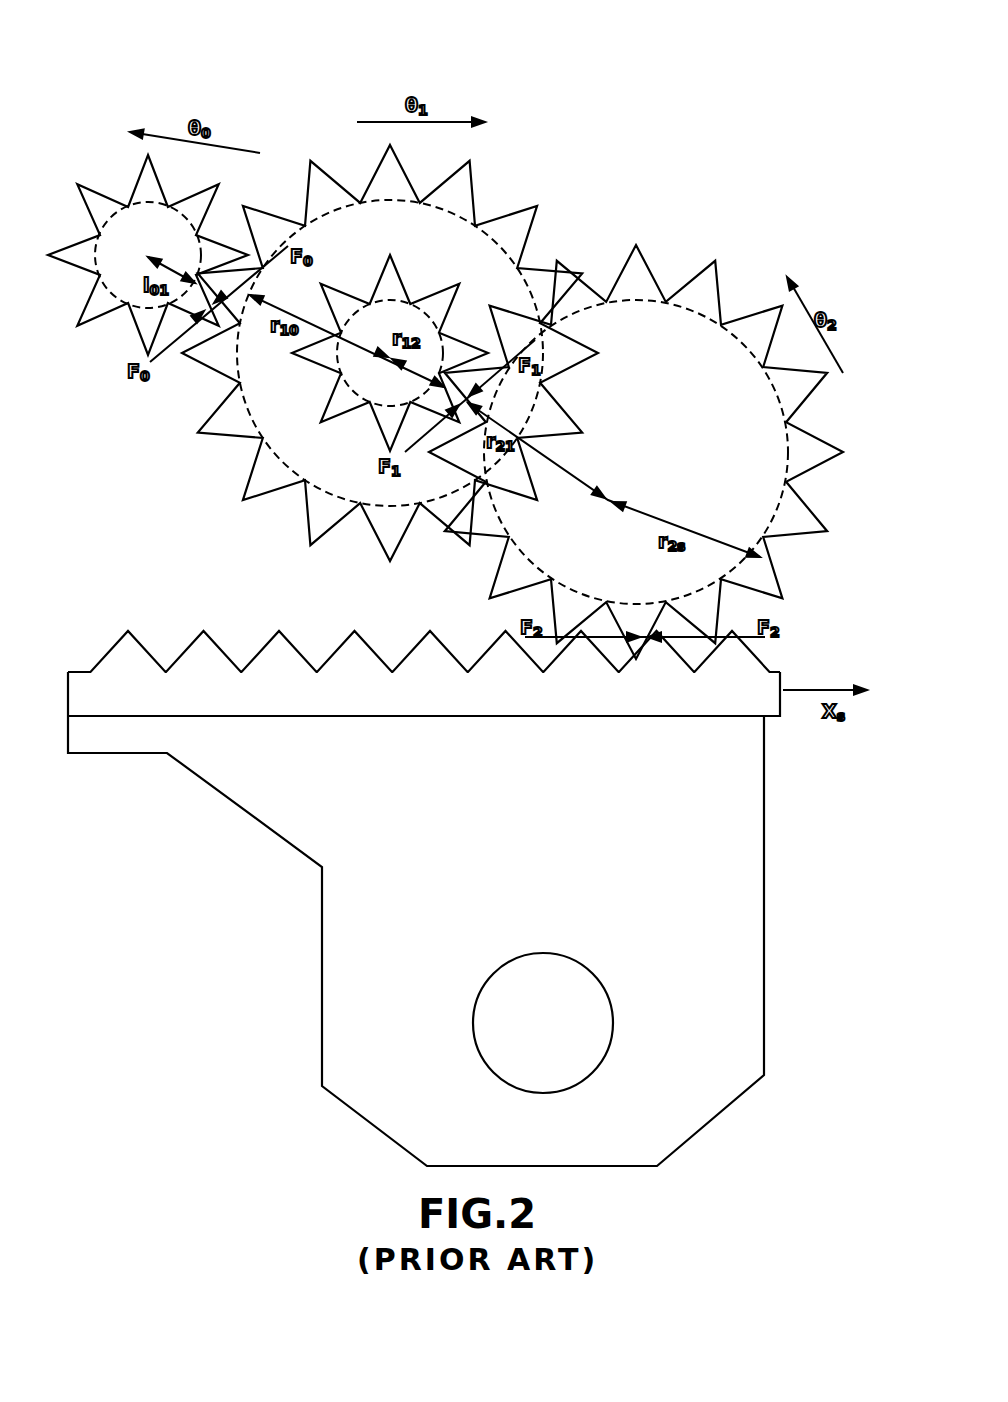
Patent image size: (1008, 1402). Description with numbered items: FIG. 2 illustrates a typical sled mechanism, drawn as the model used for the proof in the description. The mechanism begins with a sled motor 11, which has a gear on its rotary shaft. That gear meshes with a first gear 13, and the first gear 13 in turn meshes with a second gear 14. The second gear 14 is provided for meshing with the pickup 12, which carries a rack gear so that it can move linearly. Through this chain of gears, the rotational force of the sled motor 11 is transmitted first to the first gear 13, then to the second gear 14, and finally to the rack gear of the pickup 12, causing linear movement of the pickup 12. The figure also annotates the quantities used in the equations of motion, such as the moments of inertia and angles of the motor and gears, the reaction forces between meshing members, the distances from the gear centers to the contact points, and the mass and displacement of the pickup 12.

The sled motor 11 is at (78, 186).
The pickup 12 is at (266, 830).
The first gear 13 is at (473, 188).
The second gear 14 is at (719, 324).